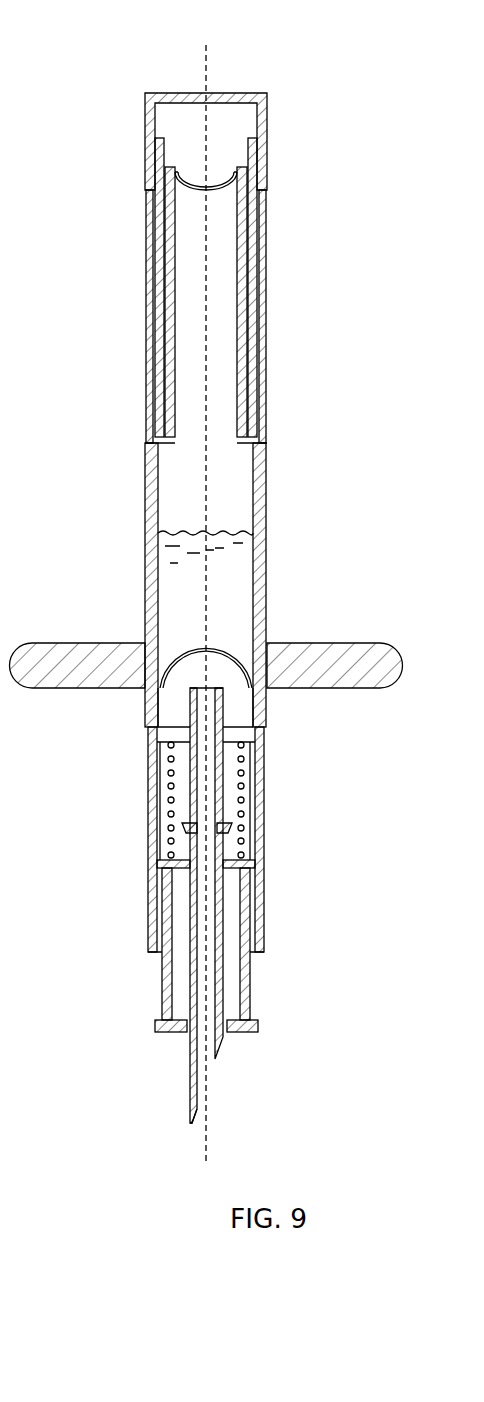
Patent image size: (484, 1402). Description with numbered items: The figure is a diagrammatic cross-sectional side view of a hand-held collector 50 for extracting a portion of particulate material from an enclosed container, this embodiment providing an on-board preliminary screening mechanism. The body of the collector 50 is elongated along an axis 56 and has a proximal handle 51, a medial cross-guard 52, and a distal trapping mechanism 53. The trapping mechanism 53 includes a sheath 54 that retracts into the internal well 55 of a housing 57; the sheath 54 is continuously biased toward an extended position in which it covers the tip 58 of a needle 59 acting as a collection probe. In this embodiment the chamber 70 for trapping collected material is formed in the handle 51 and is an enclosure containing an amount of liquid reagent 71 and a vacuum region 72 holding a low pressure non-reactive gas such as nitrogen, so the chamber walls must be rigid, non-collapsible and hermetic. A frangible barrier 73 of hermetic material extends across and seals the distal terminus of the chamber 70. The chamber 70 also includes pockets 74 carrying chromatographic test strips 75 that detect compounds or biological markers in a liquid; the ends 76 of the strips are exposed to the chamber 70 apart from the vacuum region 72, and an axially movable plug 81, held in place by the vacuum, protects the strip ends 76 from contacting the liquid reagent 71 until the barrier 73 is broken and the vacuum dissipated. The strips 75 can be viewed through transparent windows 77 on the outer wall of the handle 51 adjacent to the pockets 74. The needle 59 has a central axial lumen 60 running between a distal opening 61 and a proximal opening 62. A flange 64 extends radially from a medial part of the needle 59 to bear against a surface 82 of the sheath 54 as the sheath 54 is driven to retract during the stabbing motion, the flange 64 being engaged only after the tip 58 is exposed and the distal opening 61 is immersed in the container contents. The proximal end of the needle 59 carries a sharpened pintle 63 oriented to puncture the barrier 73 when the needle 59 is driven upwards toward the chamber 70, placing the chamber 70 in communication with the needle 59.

The collector 50 is at (70, 140).
The handle 51 is at (270, 110).
The cross-guard 52 is at (340, 641).
The trapping mechanism 53 is at (87, 848).
The sheath 54 is at (250, 1010).
The internal well 55 is at (250, 745).
The axis 56 is at (213, 50).
The housing 57 is at (264, 778).
The tip 58 is at (192, 1124).
The needle 59 is at (232, 975).
The central axial lumen 60 is at (172, 986).
The distal opening 61 is at (214, 1081).
The proximal opening 62 is at (208, 692).
The sharpened pintle 63 is at (232, 640).
The flange 64 is at (235, 826).
The chamber 70 is at (198, 517).
The liquid reagent 71 is at (236, 545).
The vacuum region 72 is at (236, 500).
The frangible barrier 73 is at (178, 645).
The pocket 74 is at (146, 440).
The chromatographic test strip 75 is at (164, 255).
The strip end 76 is at (156, 148).
The transparent window 77 is at (148, 333).
The plug 81 is at (233, 172).
The surface 82 is at (245, 855).